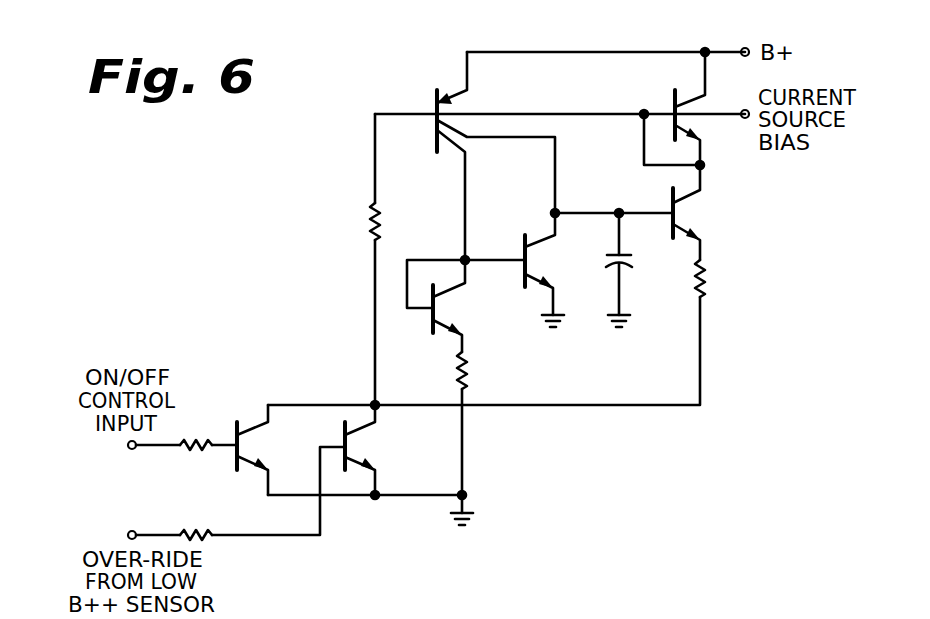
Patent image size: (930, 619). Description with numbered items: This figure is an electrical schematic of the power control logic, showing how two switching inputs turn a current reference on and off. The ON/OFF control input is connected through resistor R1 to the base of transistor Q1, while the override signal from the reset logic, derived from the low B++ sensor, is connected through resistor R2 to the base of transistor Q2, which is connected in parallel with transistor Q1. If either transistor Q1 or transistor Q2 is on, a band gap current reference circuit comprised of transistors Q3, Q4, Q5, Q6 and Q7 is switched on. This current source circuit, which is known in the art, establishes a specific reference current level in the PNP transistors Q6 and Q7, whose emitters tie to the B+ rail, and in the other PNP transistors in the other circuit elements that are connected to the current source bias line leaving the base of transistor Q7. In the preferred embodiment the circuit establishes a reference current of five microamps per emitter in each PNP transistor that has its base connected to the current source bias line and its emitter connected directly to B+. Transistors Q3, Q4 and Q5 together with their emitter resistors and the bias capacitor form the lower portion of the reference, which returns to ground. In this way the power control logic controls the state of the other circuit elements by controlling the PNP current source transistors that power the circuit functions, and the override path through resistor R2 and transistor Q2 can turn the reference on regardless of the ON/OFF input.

The transistor Q1 is at (250, 450).
The transistor Q2 is at (356, 450).
The transistor Q3 is at (452, 311).
The transistor Q4 is at (536, 264).
The transistor Q5 is at (690, 216).
The PNP transistor Q6 is at (435, 88).
The PNP transistor Q7 is at (673, 88).
The resistor R1 is at (197, 455).
The resistor R2 is at (196, 531).